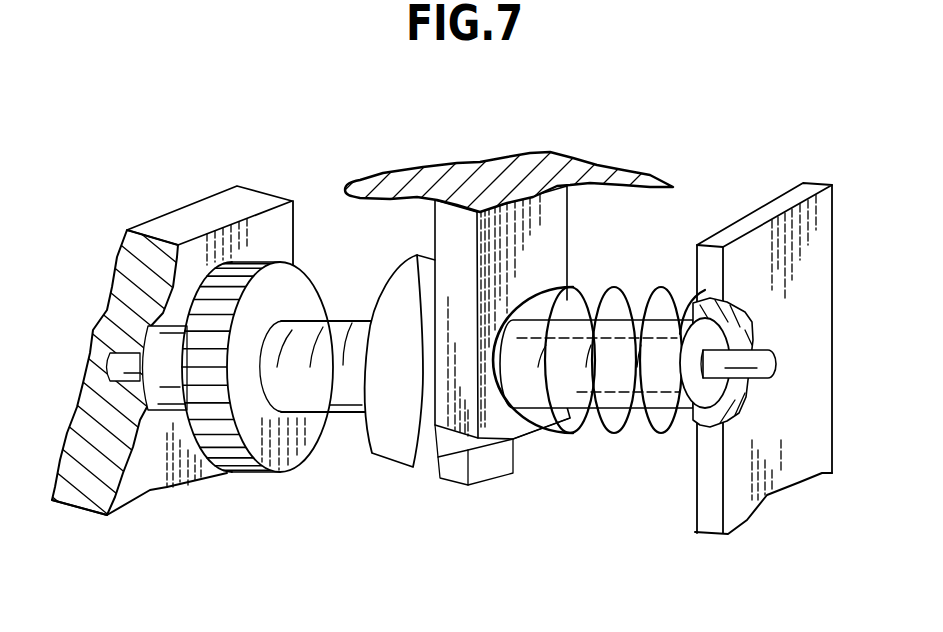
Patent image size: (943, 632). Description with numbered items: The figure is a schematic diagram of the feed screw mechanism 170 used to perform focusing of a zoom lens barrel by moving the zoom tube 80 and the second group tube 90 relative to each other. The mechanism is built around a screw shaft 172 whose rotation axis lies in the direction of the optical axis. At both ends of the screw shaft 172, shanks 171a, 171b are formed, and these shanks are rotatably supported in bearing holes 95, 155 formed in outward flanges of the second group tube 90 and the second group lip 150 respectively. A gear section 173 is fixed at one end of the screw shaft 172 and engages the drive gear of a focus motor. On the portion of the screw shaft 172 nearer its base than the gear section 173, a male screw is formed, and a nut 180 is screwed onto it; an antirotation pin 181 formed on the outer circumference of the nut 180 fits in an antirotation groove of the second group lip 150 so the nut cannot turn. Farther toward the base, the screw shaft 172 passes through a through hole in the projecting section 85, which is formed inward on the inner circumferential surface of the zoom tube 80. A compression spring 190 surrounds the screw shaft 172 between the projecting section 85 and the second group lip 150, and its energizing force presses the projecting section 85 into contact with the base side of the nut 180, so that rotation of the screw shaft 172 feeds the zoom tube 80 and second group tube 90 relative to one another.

The zoom tube 80 is at (607, 174).
The projecting section 85 is at (445, 230).
The second group tube 90 is at (155, 485).
The bearing hole 95 is at (120, 375).
The second group lip 150 is at (747, 523).
The bearing hole 155 is at (763, 380).
The feed screw mechanism 170 is at (347, 430).
The shank 171a is at (120, 375).
The shank 171b is at (760, 297).
The screw shaft 172 is at (353, 325).
The gear section 173 is at (237, 457).
The nut 180 is at (386, 452).
The antirotation pin 181 is at (490, 472).
The compression spring 190 is at (606, 440).